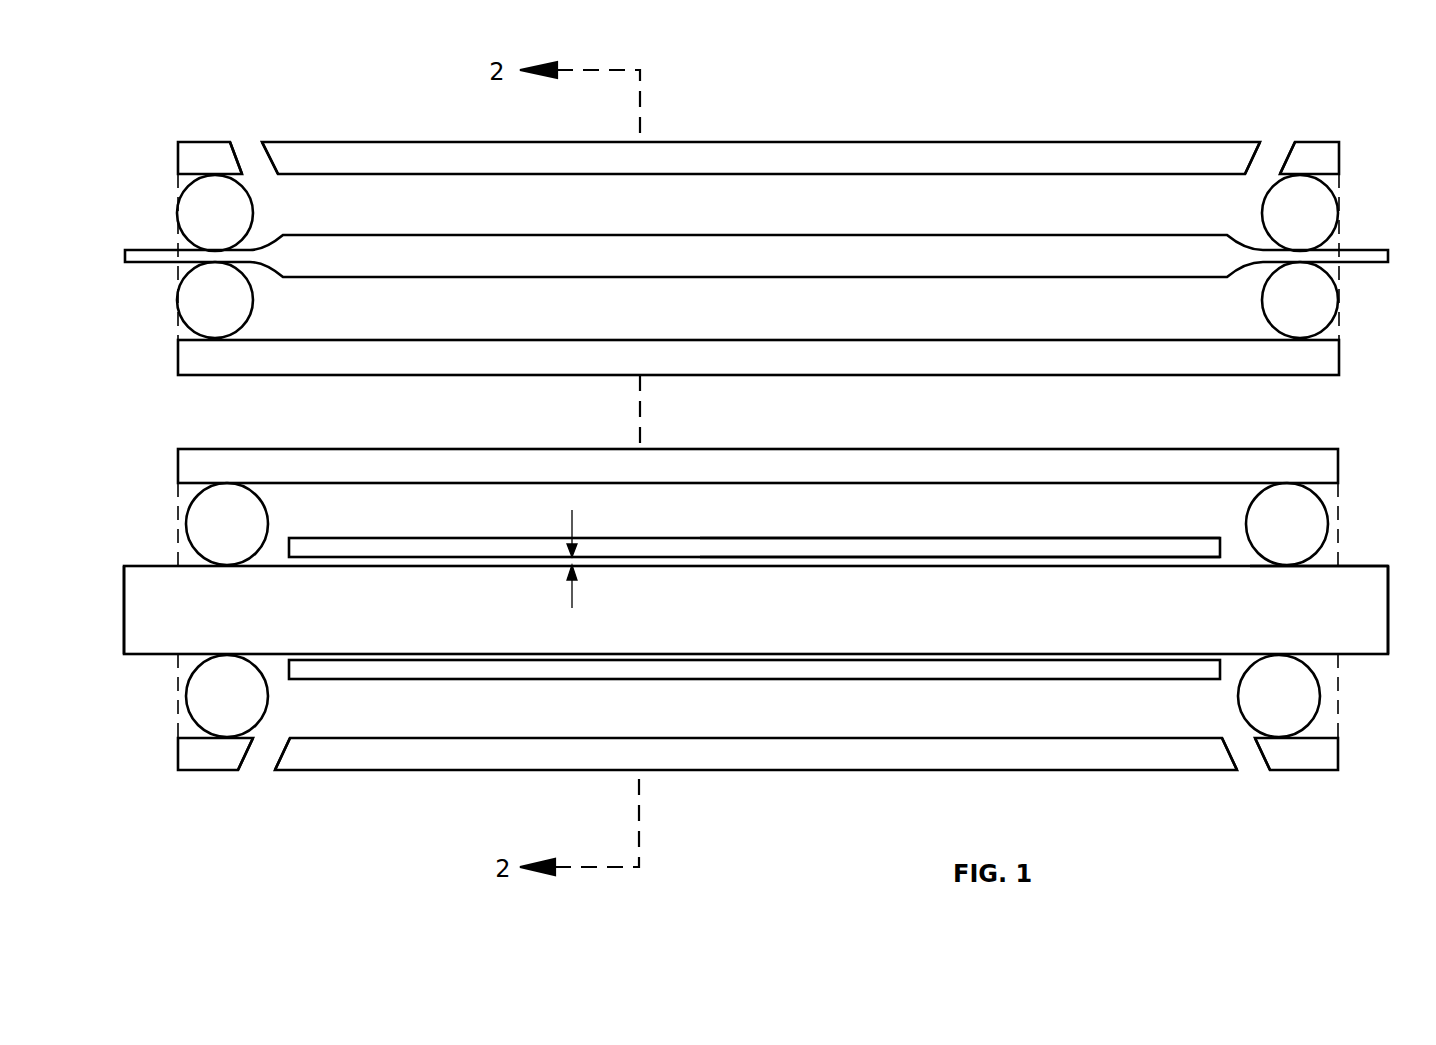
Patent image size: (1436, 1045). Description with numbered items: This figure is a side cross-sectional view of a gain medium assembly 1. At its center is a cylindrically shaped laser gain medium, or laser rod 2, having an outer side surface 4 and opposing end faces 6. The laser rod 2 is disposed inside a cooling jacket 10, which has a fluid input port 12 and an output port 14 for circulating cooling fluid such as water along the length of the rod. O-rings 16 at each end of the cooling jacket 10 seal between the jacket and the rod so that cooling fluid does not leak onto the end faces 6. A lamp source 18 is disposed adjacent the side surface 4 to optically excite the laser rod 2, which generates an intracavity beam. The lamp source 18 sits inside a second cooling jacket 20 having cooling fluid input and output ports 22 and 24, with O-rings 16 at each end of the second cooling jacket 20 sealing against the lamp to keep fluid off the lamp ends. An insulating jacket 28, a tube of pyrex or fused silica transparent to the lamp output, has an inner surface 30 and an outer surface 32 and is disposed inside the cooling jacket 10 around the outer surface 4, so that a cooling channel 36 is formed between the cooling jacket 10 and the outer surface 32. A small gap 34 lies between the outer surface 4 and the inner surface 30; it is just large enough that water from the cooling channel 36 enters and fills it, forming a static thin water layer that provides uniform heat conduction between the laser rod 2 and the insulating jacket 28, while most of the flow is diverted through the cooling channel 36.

The gain medium assembly 1 is at (1185, 72).
The laser gain medium 2 is at (709, 614).
The outer side surface 4 is at (1370, 565).
The end faces 6 is at (123, 590).
The cooling jacket 10 is at (825, 449).
The fluid input port 12 is at (257, 773).
The output port 14 is at (1252, 774).
The O-rings 16 is at (180, 322).
The lamp source 18 is at (738, 270).
The second cooling jacket 20 is at (956, 142).
The cooling fluid input port 22 is at (247, 146).
The cooling fluid output port 24 is at (1278, 140).
The insulating jacket 28 is at (412, 545).
The inner surface 30 is at (926, 542).
The outer surface 32 is at (840, 527).
The gap 34 is at (572, 521).
The cooling channel 36 is at (704, 521).